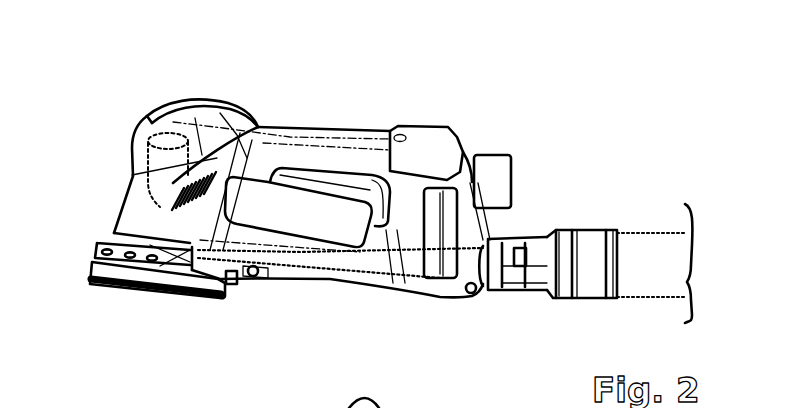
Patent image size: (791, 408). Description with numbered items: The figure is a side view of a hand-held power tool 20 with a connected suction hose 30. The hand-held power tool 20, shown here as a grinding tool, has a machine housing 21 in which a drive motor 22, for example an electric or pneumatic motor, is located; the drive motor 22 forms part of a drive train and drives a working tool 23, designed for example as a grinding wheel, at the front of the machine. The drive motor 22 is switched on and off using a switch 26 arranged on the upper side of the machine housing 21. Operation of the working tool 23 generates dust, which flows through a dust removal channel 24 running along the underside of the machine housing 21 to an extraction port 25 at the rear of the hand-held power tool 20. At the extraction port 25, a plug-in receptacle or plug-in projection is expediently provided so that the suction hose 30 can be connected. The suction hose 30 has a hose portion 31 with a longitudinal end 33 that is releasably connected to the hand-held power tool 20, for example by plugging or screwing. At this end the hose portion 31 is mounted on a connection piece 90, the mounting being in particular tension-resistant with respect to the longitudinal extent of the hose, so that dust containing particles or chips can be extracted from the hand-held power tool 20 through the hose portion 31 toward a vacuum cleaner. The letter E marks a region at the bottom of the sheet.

The hand-held power tool 20 is at (482, 137).
The machine housing 21 is at (248, 114).
The drive motor 22 is at (150, 144).
The working tool 23 is at (208, 298).
The dust removal channel 24 is at (315, 266).
The extraction port 25 is at (484, 288).
The switch 26 is at (163, 113).
The suction hose 30 is at (613, 217).
The hose portion 31 is at (646, 244).
The longitudinal end 33 is at (585, 220).
The connection piece 90 is at (578, 293).
The extraction direction E is at (390, 407).